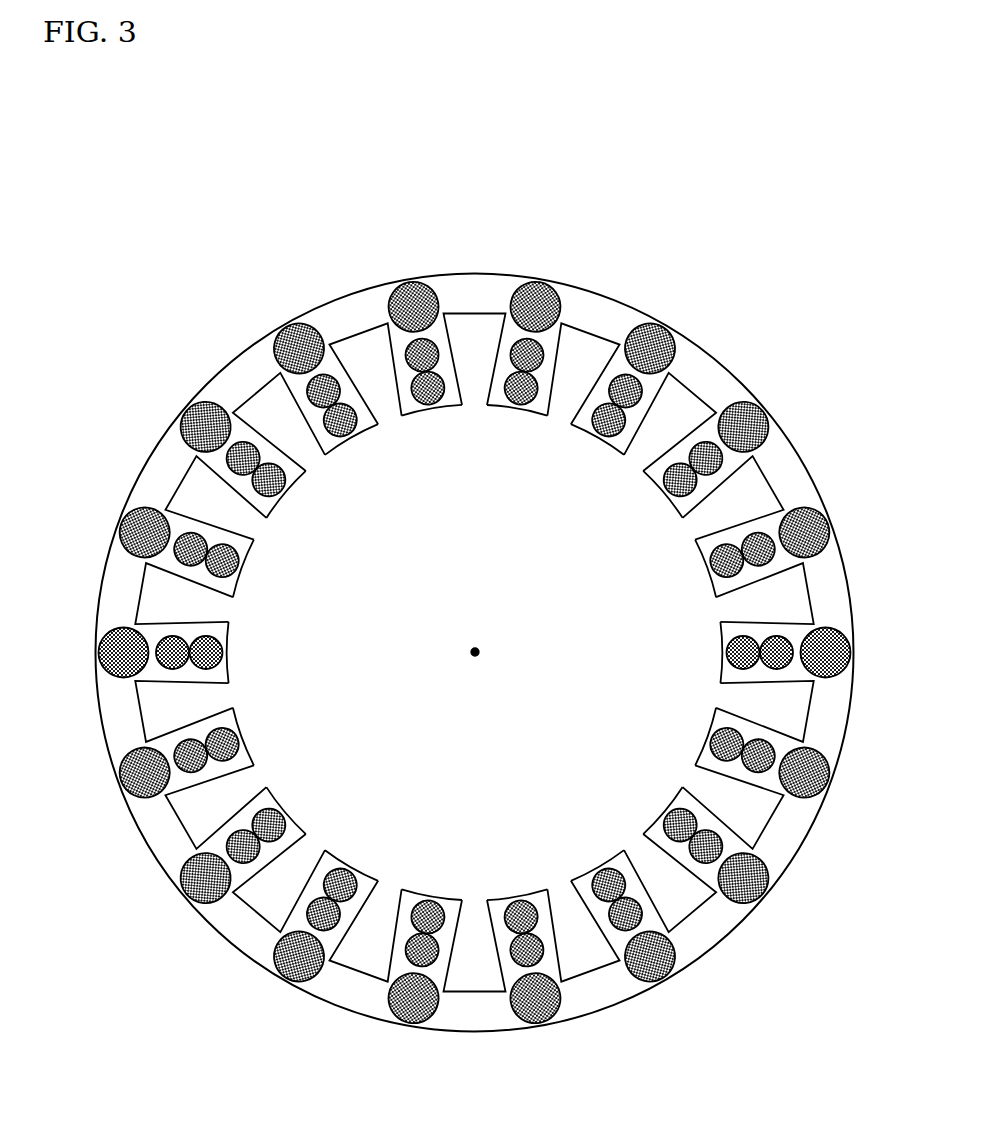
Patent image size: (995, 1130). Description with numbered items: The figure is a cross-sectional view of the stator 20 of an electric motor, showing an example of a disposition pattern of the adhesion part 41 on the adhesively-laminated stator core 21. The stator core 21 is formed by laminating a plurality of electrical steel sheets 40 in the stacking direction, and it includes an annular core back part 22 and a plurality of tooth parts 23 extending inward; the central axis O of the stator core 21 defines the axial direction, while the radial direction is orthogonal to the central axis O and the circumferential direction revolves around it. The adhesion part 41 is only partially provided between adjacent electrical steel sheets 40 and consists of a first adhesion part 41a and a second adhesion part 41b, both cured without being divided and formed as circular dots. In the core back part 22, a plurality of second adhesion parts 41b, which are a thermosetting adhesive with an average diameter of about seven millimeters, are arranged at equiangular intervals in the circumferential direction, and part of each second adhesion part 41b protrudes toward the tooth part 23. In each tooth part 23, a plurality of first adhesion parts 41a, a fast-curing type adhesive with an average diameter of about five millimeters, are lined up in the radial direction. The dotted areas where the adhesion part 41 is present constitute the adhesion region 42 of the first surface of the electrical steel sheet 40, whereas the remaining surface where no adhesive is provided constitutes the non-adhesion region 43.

The stator 20 is at (780, 134).
The stator core 21 is at (698, 197).
The core back part 22 is at (695, 363).
The tooth part 23 is at (617, 367).
The electrical steel sheet 40 is at (247, 365).
The adhesion part 41 is at (385, 197).
The first adhesion part 41a is at (356, 418).
The second adhesion part 41b is at (300, 334).
The adhesion region 42 is at (197, 770).
The non-adhesion region 43 is at (118, 723).
The central axis O is at (478, 648).